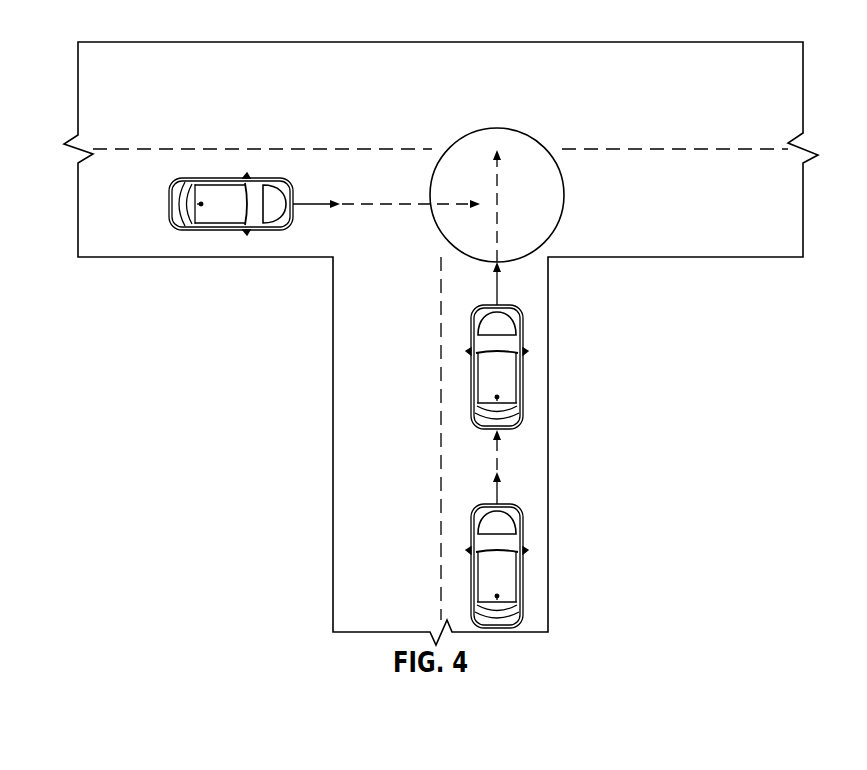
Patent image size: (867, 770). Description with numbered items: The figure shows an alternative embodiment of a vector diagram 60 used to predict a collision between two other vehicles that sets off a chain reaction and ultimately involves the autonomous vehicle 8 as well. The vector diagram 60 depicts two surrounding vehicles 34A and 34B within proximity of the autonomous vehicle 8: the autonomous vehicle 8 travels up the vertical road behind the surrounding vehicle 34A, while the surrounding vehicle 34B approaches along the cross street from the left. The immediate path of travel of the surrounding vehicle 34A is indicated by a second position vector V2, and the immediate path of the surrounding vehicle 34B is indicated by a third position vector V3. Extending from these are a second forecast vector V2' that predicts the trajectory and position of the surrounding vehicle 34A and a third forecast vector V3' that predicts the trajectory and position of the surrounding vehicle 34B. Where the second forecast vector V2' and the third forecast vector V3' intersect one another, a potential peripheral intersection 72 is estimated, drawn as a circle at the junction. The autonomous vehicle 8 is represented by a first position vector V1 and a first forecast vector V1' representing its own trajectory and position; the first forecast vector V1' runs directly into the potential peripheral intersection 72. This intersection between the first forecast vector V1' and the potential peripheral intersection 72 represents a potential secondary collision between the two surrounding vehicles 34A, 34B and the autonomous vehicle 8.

The vector diagram 60 is at (86, 27).
The potential peripheral intersection 72 is at (513, 128).
The surrounding vehicle 34B is at (201, 232).
The surrounding vehicle 34A is at (518, 335).
The autonomous vehicle 8 is at (520, 535).
The third position vector V3 is at (317, 179).
The third forecast vector V3' is at (411, 175).
The second position vector V2 is at (539, 296).
The second forecast vector V2' is at (522, 206).
The first position vector V1 is at (539, 507).
The first forecast vector V1' is at (542, 466).